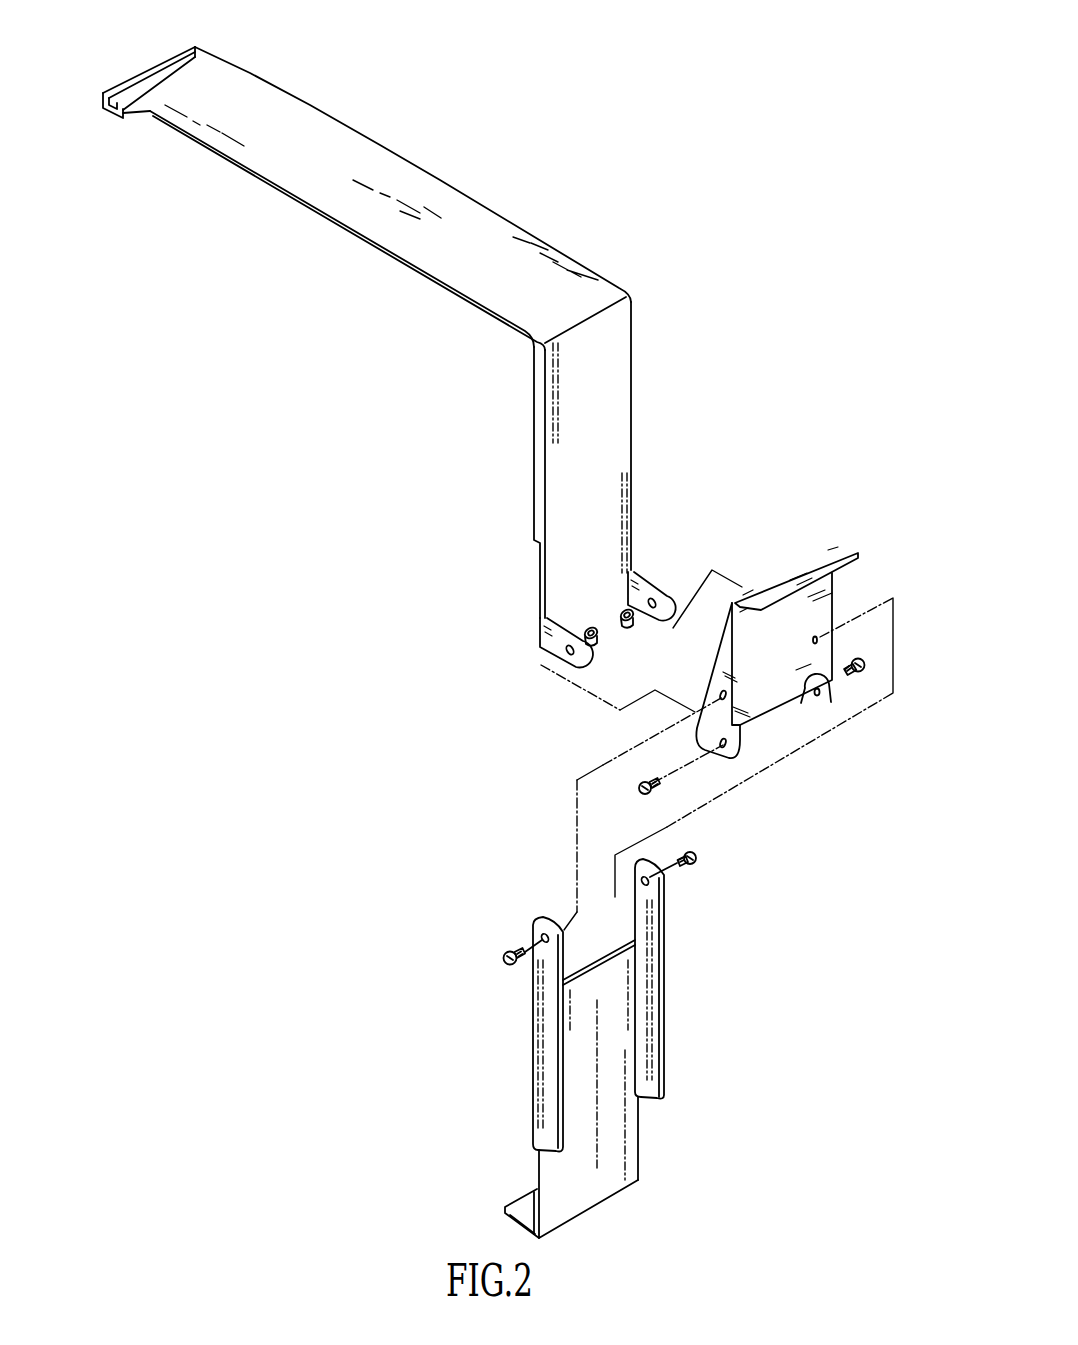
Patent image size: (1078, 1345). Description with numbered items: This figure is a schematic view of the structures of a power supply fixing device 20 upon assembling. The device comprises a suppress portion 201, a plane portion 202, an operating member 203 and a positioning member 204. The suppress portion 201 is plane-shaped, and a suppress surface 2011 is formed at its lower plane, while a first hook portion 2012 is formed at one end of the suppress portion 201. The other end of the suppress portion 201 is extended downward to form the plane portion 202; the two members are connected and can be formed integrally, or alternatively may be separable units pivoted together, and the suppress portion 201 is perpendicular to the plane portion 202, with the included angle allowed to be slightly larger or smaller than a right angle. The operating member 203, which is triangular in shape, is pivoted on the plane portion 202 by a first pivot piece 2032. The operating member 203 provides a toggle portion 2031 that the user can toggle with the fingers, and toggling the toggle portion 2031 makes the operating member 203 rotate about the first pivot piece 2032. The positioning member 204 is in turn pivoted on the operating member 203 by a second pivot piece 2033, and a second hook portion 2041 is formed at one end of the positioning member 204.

The power supply fixing device 20 is at (786, 243).
The suppress portion 201 is at (457, 226).
The suppress surface 2011 is at (341, 237).
The first hook portion 2012 is at (150, 68).
The plane portion 202 is at (603, 385).
The operating member 203 is at (780, 578).
The toggle portion 2031 is at (822, 558).
The first pivot piece 2032 is at (867, 657).
The second pivot piece 2033 is at (691, 855).
The positioning member 204 is at (612, 1017).
The second hook portion 2041 is at (525, 1203).